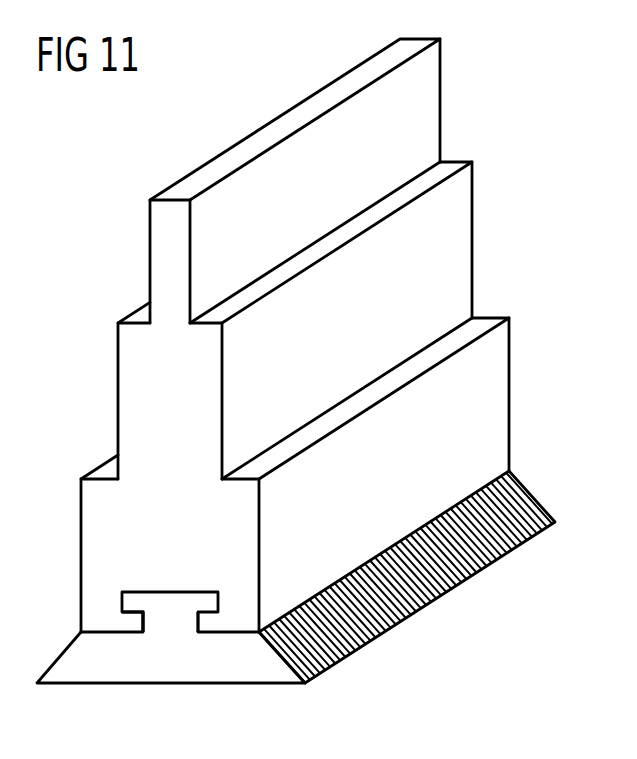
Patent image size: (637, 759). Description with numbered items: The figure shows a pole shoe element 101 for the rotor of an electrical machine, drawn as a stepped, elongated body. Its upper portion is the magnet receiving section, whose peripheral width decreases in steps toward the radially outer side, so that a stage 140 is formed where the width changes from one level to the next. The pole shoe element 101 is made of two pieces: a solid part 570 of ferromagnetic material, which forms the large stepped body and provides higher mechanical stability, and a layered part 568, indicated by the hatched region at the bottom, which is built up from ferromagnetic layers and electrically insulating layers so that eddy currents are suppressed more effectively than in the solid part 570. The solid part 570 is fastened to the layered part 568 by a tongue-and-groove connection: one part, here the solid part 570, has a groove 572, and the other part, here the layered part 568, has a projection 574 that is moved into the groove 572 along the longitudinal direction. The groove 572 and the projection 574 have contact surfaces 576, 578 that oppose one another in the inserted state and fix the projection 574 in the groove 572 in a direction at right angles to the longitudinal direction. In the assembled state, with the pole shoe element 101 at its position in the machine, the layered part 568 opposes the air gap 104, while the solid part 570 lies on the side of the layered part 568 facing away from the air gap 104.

The pole shoe element 101 is at (320, 384).
The stage 140 is at (445, 172).
The solid part 570 is at (498, 403).
The layered part 568 is at (512, 518).
The air gap 104 is at (338, 728).
The projection 574 is at (154, 607).
The contact surface 576 is at (128, 603).
The contact surface 578 is at (133, 613).
The groove 572 is at (183, 600).